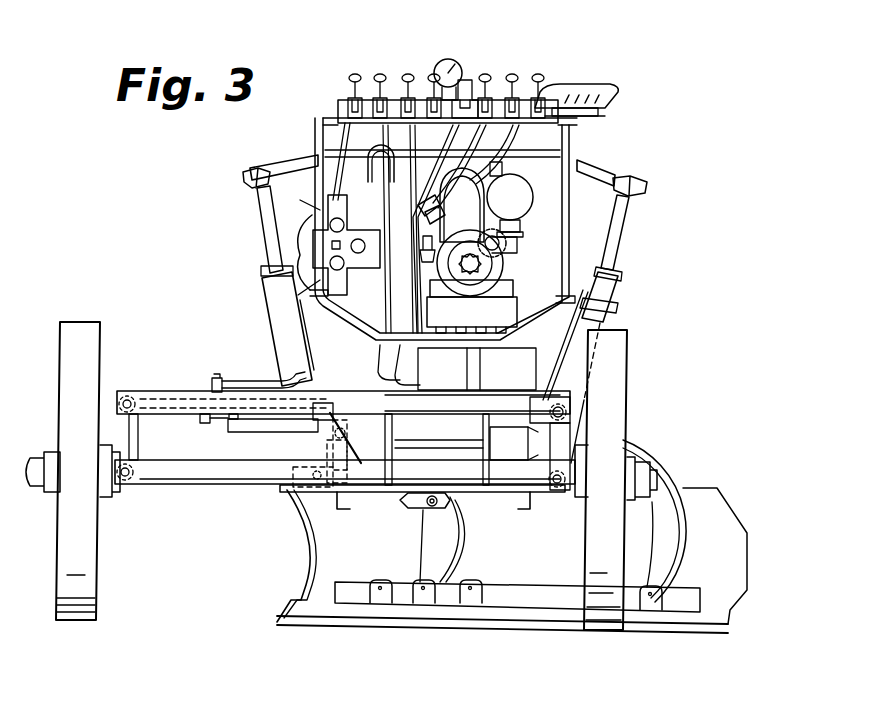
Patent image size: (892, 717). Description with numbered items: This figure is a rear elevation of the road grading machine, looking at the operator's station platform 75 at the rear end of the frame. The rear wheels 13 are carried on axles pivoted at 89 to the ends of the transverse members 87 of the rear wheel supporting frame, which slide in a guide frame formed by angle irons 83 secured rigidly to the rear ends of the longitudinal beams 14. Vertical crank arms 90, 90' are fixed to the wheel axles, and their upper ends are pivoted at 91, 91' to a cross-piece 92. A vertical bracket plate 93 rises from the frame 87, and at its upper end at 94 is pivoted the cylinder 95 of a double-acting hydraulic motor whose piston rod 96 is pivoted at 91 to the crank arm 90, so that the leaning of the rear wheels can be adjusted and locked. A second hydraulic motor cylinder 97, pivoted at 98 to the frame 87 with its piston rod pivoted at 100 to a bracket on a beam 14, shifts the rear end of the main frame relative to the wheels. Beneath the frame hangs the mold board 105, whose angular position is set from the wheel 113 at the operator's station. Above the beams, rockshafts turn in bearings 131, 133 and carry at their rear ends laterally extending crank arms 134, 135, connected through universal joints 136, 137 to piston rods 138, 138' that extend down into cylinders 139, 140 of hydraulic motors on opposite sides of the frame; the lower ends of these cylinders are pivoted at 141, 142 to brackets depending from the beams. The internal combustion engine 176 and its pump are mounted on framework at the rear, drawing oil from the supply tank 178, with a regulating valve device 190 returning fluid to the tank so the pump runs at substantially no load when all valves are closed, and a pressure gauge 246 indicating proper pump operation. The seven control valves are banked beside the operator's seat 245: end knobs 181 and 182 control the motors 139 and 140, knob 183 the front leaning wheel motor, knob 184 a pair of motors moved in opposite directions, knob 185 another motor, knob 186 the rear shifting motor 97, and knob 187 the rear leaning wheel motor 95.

The rear wheel 13 is at (78, 622).
The longitudinal beam 14 is at (528, 279).
The platform 75 is at (473, 334).
The angle iron 83 is at (345, 500).
The transverse member 87 is at (178, 486).
The pivot 89 is at (125, 482).
The vertical crank arm 90 is at (158, 437).
The vertical crank arm 90' is at (617, 450).
The pivot 91 is at (127, 375).
The pivot 91' is at (606, 402).
The cross-piece 92 is at (155, 390).
The vertical bracket plate 93 is at (313, 440).
The pivot 94 is at (334, 418).
The cylinder 95 is at (252, 431).
The piston rod 96 is at (182, 398).
The cylinder 97 is at (509, 462).
The pivot 98 is at (563, 367).
The pivot 100 is at (350, 432).
The mold board 105 is at (302, 574).
The wheel 113 is at (312, 240).
The bearing 131 is at (374, 155).
The bearing 133 is at (516, 173).
The crank arm 134 is at (292, 162).
The crank arm 135 is at (600, 168).
The universal joint 136 is at (252, 170).
The universal joint 137 is at (645, 182).
The piston rod 138 is at (235, 229).
The piston rod 138' is at (649, 232).
The cylinder 139 is at (280, 328).
The cylinder 140 is at (607, 318).
The pivot 141 is at (298, 490).
The pivot 142 is at (563, 500).
The internal combustion engine 176 is at (462, 205).
The supply tank 178 is at (472, 281).
The end knob 181 is at (352, 74).
The end knob 182 is at (542, 77).
The knob 183 is at (516, 75).
The knob 184 is at (487, 75).
The knob 185 is at (433, 74).
The knob 186 is at (408, 74).
The knob 187 is at (378, 74).
The regulating valve device 190 is at (470, 80).
The operator's seat 245 is at (608, 90).
The pressure gauge 246 is at (456, 58).